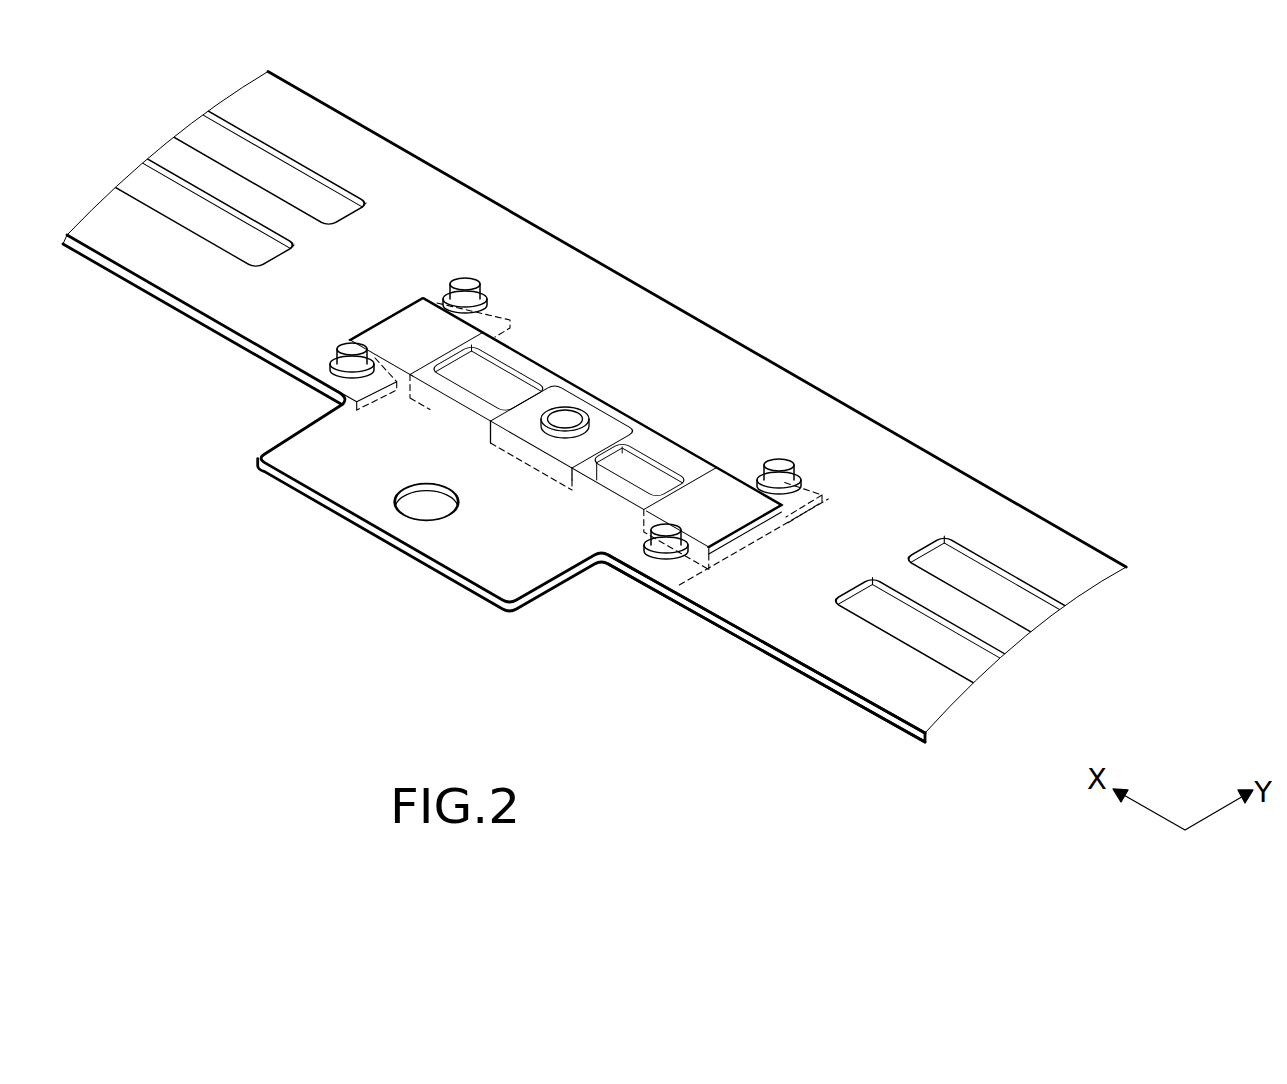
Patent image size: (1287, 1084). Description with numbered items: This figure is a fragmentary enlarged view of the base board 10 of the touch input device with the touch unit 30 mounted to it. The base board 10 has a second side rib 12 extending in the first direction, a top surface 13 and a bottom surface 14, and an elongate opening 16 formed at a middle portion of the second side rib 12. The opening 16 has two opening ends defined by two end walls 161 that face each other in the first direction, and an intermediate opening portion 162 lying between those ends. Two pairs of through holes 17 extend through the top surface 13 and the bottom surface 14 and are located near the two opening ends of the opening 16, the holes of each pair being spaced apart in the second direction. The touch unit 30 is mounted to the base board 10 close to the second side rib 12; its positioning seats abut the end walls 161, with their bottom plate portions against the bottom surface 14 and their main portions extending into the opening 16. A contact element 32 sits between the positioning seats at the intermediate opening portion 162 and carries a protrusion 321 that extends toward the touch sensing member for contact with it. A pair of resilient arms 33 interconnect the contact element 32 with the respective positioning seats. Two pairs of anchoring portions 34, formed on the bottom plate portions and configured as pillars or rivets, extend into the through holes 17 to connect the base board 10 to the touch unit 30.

The base board 10 is at (798, 672).
The second side rib 12 is at (758, 638).
The top surface 13 is at (930, 687).
The bottom surface 14 is at (865, 707).
The opening 16 is at (660, 315).
The end walls 161 is at (800, 542).
The intermediate opening portion 162 is at (620, 405).
The through holes 17 is at (666, 562).
The touch unit 30 is at (587, 299).
The contact element 32 is at (565, 422).
The protrusion 321 is at (570, 417).
The resilient arms 33 is at (638, 468).
The anchoring portions 34 is at (655, 575).